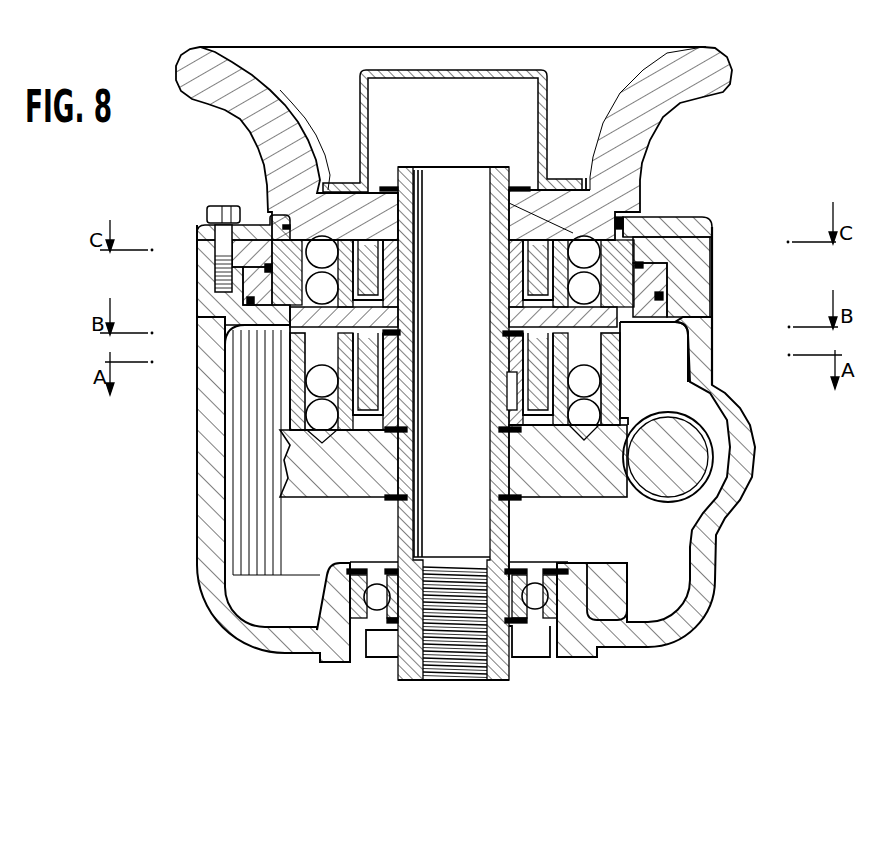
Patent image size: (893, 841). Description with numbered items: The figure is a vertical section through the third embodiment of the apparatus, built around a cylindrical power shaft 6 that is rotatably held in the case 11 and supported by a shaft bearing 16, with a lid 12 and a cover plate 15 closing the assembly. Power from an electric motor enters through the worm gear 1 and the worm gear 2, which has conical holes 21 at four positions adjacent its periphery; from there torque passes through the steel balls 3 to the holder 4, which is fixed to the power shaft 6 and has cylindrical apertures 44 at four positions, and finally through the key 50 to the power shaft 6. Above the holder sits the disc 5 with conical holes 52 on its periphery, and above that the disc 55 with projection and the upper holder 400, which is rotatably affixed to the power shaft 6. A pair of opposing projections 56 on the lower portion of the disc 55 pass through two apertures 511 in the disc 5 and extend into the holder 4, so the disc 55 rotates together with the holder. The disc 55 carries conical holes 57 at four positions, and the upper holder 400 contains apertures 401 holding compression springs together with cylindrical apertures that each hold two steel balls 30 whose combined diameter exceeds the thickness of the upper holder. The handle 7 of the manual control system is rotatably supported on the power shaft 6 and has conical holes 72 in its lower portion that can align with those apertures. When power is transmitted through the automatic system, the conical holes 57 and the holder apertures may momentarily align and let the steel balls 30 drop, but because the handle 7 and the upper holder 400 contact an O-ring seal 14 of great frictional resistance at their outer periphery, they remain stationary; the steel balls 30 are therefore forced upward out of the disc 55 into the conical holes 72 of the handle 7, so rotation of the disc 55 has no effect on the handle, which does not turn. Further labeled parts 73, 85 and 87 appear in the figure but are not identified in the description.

The worm gear 1 is at (660, 488).
The worm gear 2 is at (600, 478).
The steel balls 3 is at (622, 410).
The holder 4 is at (620, 390).
The disc 5 is at (623, 357).
The power shaft 6 is at (502, 463).
The handle 7 is at (662, 100).
The case 11 is at (750, 418).
The lid 12 is at (713, 220).
The O-ring seal 14 is at (632, 220).
The cover plate 15 is at (545, 68).
The shaft bearing 16 is at (702, 243).
The conical holes 21 is at (580, 425).
The steel balls 30 is at (607, 237).
The cylindrical apertures 44 is at (312, 394).
The key 50 is at (507, 395).
The conical holes 52 is at (623, 365).
The disc with projection 55 is at (623, 334).
The projections 56 is at (398, 425).
The conical holes 57 is at (715, 327).
The conical holes 72 is at (509, 202).
The lower bearing housing 73 is at (348, 632).
The lower labyrinth seal 85 is at (400, 395).
The upper labyrinth seal 87 is at (370, 268).
The upper holder 400 is at (645, 266).
The apertures 401 is at (664, 297).
The apertures 511 is at (323, 343).